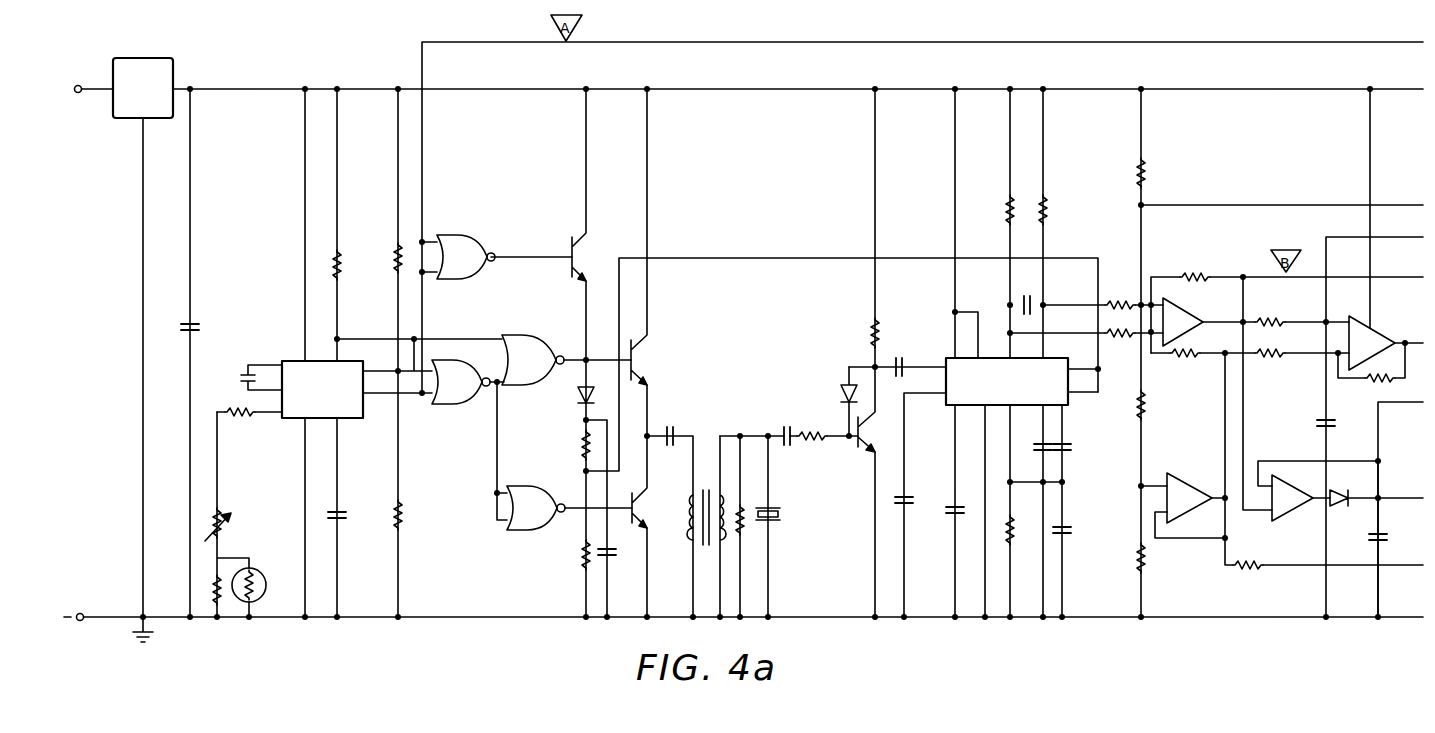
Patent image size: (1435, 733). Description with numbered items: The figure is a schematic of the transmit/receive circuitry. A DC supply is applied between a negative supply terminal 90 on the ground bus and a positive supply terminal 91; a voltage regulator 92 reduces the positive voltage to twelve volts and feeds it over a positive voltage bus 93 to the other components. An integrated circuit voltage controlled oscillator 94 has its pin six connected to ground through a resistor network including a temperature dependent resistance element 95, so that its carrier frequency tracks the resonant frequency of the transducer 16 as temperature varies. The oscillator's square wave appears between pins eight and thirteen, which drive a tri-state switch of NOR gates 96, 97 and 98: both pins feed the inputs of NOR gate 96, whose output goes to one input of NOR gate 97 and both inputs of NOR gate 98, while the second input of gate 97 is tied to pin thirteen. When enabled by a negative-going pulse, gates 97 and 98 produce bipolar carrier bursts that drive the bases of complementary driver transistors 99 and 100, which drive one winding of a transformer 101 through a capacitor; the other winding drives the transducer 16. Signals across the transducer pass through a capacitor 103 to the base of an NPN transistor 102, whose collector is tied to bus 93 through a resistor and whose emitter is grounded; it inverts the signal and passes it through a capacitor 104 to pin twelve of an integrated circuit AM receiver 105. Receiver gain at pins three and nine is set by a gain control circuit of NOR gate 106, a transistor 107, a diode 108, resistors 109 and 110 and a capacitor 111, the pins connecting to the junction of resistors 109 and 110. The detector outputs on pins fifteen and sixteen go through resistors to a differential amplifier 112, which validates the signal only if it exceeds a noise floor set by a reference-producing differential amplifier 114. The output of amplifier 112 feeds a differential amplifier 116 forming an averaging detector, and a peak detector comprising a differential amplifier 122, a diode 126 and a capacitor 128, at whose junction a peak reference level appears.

The transducer 16 is at (782, 516).
The negative supply terminal 90 is at (80, 621).
The positive supply terminal 91 is at (81, 85).
The voltage regulator 92 is at (135, 58).
The positive voltage bus 93 is at (262, 87).
The integrated circuit voltage controlled oscillator 94 is at (292, 358).
The temperature dependent resistance element 95 is at (264, 574).
The NOR gate 96 is at (444, 404).
The NOR gate 97 is at (515, 336).
The NOR gate 98 is at (544, 532).
The driver transistor 99 is at (632, 340).
The driver transistor 100 is at (634, 498).
The transformer 101 is at (706, 447).
The NPN transistor 102 is at (868, 458).
The capacitor 103 is at (788, 428).
The capacitor 104 is at (904, 362).
The integrated circuit AM receiver 105 is at (944, 356).
The NOR gate 106 is at (466, 234).
The transistor 107 is at (570, 238).
The diode 108 is at (578, 390).
The resistor 109 is at (578, 446).
The resistor 110 is at (582, 560).
The capacitor 111 is at (612, 550).
The differential amplifier 112 is at (1178, 307).
The differential amplifier 114 is at (1190, 478).
The differential amplifier 116 is at (1382, 330).
The differential amplifier 122 is at (1290, 522).
The diode 126 is at (1338, 506).
The capacitor 128 is at (1374, 542).